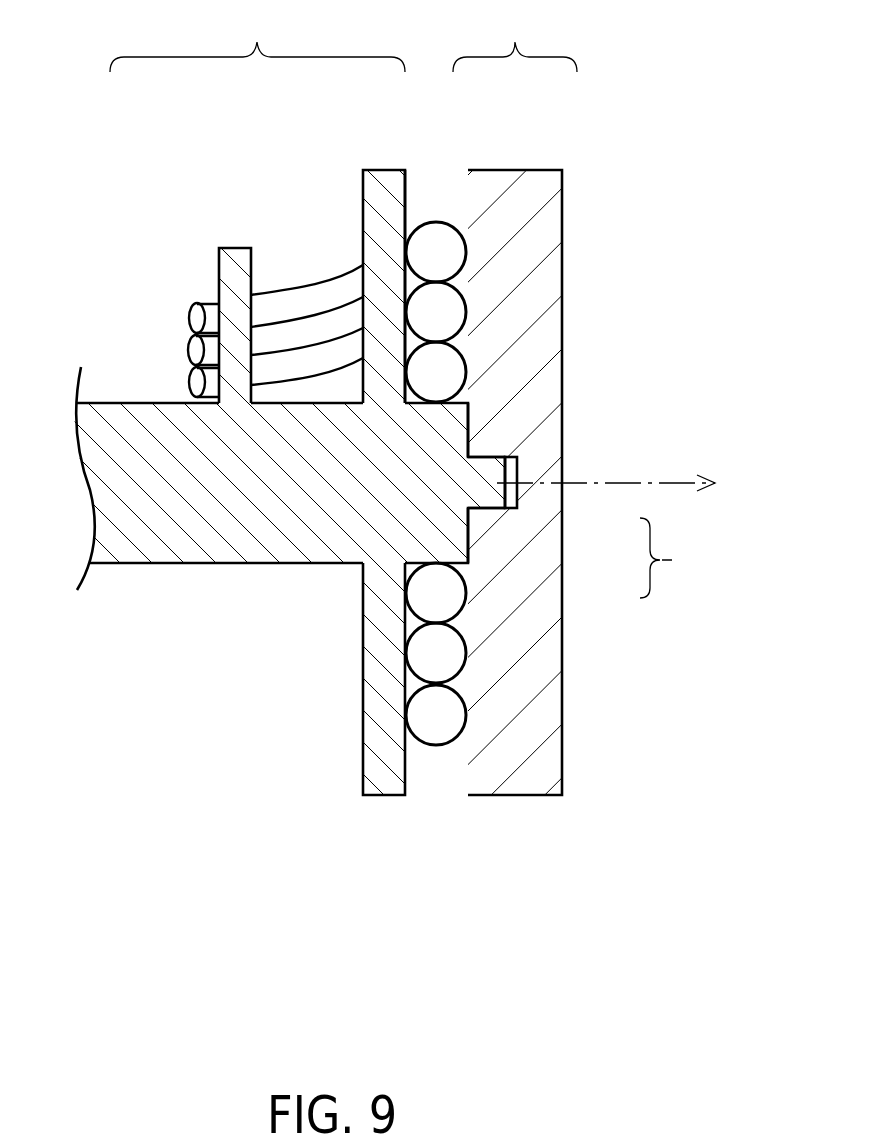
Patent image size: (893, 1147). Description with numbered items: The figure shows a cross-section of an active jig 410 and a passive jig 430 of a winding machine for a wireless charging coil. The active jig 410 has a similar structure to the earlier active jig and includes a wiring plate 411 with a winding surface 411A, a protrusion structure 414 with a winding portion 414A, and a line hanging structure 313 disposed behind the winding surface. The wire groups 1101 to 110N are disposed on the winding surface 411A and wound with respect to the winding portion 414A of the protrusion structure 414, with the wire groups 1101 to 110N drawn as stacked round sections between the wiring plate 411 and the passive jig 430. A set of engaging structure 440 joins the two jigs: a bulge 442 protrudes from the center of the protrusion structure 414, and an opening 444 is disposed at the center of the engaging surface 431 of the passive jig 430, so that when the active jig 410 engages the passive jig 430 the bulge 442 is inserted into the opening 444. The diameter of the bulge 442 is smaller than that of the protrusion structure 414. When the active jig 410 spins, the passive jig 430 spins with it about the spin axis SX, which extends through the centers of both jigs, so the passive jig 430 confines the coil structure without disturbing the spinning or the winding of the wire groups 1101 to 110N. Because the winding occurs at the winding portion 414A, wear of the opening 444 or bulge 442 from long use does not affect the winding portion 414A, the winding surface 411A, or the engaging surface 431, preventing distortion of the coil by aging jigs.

The active jig 410 is at (257, 37).
The passive jig 430 is at (515, 37).
The wiring plate 411 is at (377, 188).
The winding surface 411A is at (407, 192).
The engaging surface 431 is at (468, 203).
The line hanging structure 313 is at (233, 272).
The wire group 110N is at (442, 254).
The wire group 1101 is at (443, 370).
The protrusion structure 414 is at (428, 498).
The winding portion 414A is at (470, 408).
The bulge 442 is at (487, 500).
The opening 444 is at (523, 519).
The engaging structure 440 is at (680, 558).
The spin axis SX is at (627, 484).